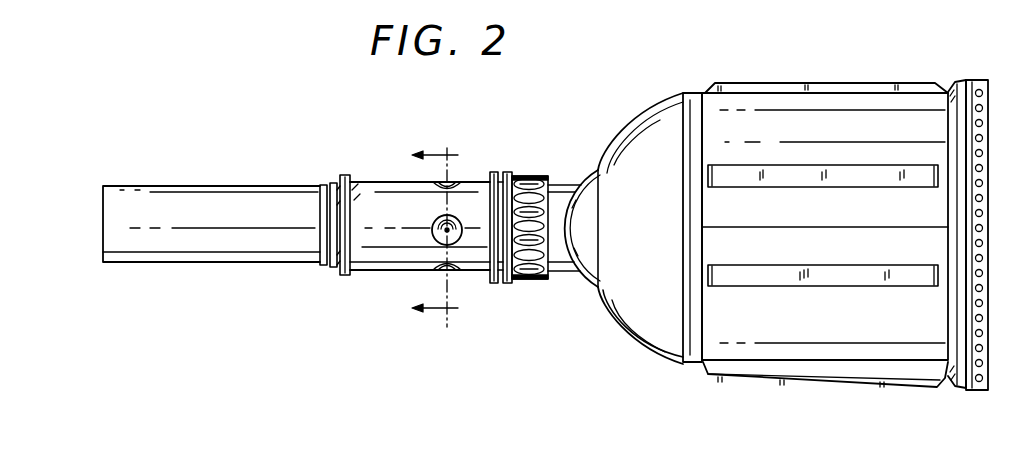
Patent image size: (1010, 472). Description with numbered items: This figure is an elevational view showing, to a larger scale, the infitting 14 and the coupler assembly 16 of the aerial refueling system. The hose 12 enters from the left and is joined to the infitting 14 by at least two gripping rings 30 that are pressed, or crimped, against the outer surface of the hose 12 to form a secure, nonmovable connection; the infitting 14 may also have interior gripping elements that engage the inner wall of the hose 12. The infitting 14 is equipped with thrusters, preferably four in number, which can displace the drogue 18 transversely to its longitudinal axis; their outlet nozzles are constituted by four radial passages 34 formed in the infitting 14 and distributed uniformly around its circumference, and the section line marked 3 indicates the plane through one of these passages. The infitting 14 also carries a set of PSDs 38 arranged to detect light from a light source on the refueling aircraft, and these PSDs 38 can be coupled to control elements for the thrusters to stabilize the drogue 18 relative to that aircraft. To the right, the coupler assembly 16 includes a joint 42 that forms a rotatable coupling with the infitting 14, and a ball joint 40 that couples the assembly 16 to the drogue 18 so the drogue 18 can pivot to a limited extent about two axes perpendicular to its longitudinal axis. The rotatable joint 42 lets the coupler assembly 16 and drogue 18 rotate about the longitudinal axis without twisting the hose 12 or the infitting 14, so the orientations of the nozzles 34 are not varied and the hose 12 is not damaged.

The hose 12 is at (180, 186).
The gripping rings 30 is at (338, 178).
The infitting 14 is at (473, 192).
The section line 3- 3 is at (435, 232).
The radial passages 34 is at (428, 178).
The PSDs 38 is at (497, 172).
The joint 42 is at (528, 284).
The ball joint 40 is at (585, 170).
The coupler assembly 16 is at (632, 328).
The drogue 18 is at (988, 0).